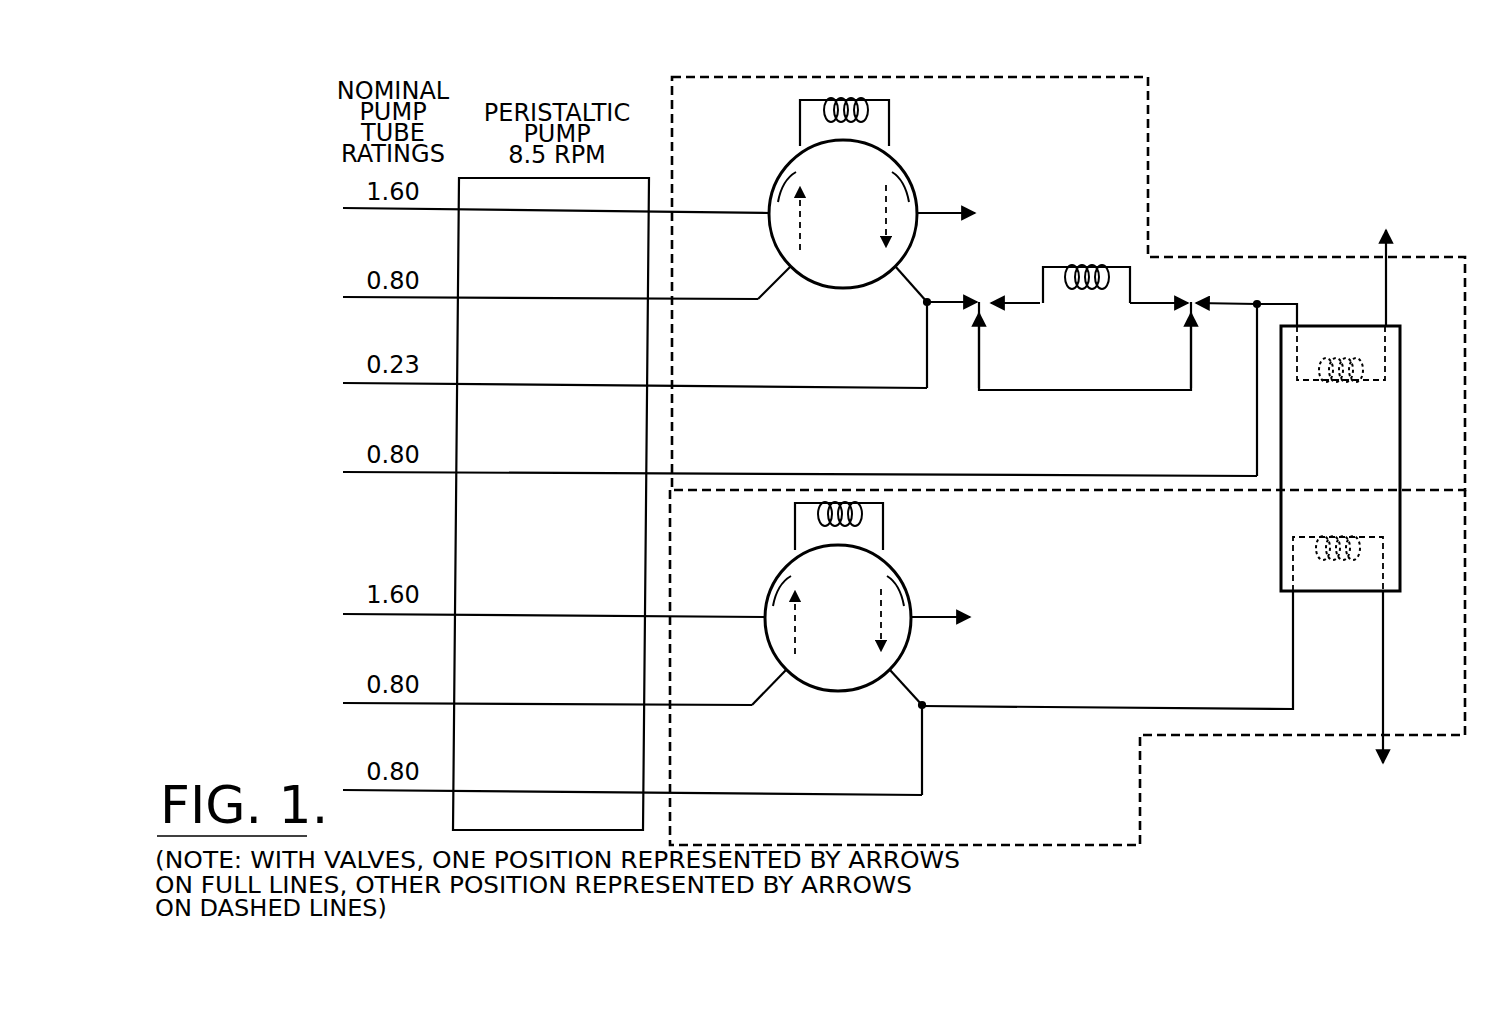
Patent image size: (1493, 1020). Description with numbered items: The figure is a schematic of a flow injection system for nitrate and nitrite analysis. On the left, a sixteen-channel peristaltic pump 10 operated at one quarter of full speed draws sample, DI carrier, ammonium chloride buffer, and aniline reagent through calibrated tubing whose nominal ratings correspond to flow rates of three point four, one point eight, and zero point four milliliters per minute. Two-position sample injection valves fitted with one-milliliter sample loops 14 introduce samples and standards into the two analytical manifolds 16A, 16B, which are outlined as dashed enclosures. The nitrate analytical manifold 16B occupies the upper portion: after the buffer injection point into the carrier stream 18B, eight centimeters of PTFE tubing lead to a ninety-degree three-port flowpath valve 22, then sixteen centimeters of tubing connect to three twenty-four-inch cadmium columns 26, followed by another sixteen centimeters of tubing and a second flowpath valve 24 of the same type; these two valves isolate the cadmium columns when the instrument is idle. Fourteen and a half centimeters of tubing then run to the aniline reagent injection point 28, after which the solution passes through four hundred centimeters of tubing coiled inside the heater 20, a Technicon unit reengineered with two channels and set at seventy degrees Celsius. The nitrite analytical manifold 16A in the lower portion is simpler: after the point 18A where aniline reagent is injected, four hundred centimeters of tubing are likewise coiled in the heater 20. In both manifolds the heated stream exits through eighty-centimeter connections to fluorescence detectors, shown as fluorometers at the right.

The peristaltic pump 10 is at (552, 432).
The sample loop 14 is at (808, 96).
The nitrite analytical manifold 16A is at (1067, 691).
The nitrate analytical manifold 16B is at (1068, 283).
The aniline reagent injection point 18A is at (923, 708).
The buffer injection point 18B is at (926, 304).
The heater 20 is at (1198, 494).
The flowpath valve 22 is at (1059, 310).
The flowpath valve 24 is at (1195, 300).
The cadmium columns 26 is at (1090, 261).
The aniline reagent injection point 28 is at (1255, 325).